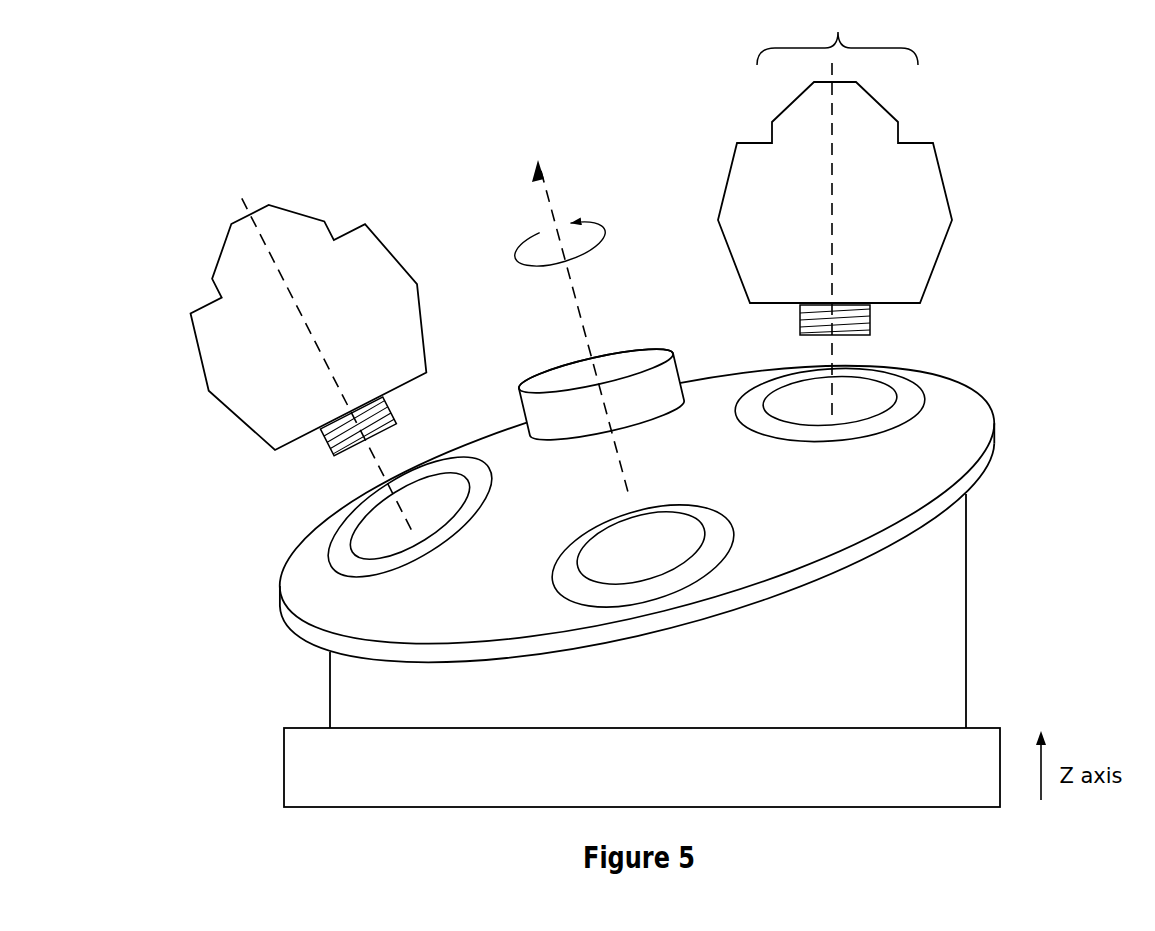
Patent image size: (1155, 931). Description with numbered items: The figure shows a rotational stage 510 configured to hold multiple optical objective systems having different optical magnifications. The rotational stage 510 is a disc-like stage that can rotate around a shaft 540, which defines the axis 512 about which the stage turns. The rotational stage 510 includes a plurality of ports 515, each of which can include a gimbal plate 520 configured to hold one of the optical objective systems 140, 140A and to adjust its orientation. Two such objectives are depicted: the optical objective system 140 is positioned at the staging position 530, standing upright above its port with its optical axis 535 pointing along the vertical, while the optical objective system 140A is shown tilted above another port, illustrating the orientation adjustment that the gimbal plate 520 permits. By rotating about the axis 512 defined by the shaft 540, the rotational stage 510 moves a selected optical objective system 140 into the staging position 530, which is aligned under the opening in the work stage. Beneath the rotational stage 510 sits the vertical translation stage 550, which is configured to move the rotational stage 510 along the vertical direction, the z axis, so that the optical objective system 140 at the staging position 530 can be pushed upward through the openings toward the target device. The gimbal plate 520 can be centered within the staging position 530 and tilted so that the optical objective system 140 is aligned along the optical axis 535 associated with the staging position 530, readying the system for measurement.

The rotational stage 510 is at (945, 423).
The axis 512 is at (547, 198).
The ports 515 is at (375, 527).
The gimbal plate 520 is at (723, 542).
The staging position 530 is at (867, 212).
The optical axis 535 is at (840, 124).
The shaft 540 is at (638, 360).
The vertical translation stage 550 is at (634, 780).
The optical objective system 140 is at (922, 194).
The optical objective system 140A is at (362, 250).